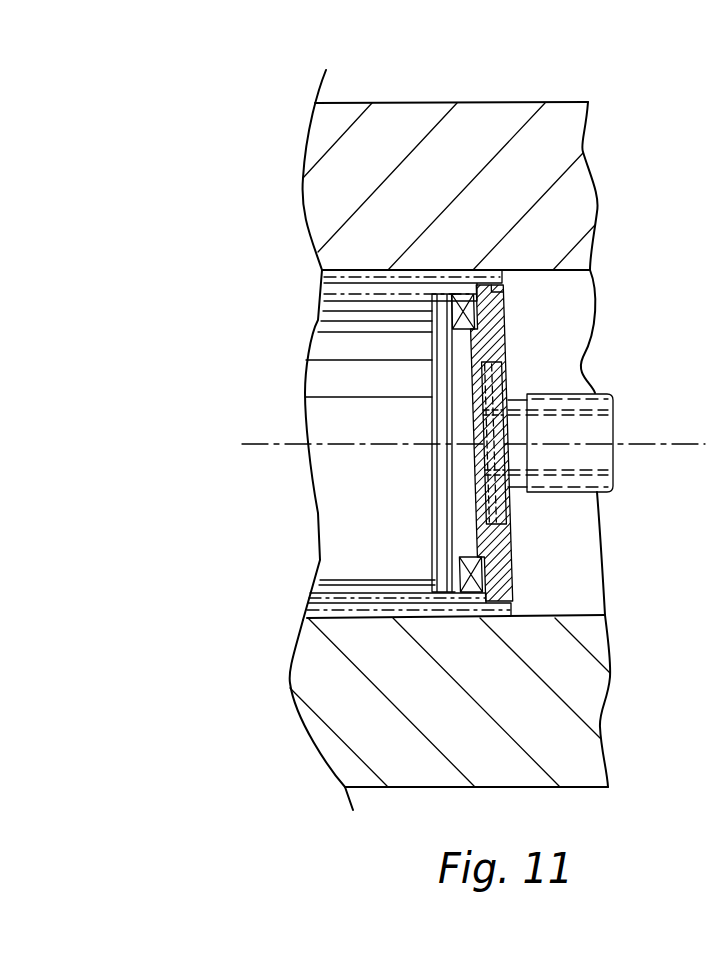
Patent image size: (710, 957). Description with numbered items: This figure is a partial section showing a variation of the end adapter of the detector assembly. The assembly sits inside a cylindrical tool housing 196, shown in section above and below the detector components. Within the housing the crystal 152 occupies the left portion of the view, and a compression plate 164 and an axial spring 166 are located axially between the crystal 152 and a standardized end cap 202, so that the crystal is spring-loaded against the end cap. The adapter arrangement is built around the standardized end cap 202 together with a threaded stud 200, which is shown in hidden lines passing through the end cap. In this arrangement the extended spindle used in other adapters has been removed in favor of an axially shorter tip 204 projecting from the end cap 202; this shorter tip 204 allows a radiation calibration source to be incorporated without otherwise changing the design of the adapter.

The cylindrical tool housing 196 is at (478, 132).
The standardized end cap 202 is at (493, 333).
The threaded stud 200 is at (497, 393).
The compression plate 164 is at (442, 413).
The crystal 152 is at (345, 510).
The axially shorter tip 204 is at (593, 456).
The axial spring 166 is at (466, 598).